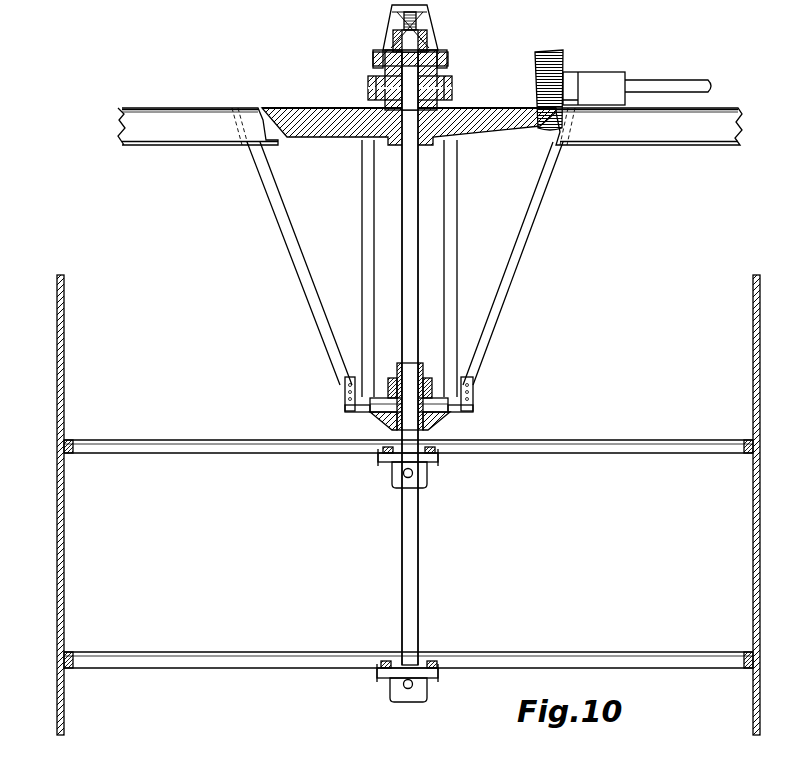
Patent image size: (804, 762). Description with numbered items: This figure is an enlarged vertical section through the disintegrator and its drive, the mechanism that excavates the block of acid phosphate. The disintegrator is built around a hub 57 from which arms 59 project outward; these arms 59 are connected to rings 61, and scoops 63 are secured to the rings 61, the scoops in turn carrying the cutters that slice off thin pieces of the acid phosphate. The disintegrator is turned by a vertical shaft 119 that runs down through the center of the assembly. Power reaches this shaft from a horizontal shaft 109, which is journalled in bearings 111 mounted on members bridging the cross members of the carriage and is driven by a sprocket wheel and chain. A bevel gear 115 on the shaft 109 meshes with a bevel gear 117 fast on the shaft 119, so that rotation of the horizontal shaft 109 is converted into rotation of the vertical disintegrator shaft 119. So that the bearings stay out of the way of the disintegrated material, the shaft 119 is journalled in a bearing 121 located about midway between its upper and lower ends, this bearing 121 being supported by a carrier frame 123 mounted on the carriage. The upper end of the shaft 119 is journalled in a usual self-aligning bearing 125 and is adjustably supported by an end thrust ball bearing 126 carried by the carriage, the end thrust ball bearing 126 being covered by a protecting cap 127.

The hub 57 is at (428, 476).
The arms 59 is at (440, 460).
The rings 61 is at (566, 441).
The scoops 63 is at (67, 405).
The shaft 109 is at (668, 80).
The bearings 111 is at (623, 72).
The bevel gear 115 is at (565, 57).
The bevel gear 117 is at (482, 116).
The shaft 119 is at (423, 211).
The bearing 121 is at (473, 398).
The carrier frame 123 is at (287, 208).
The self-aligning bearing 125 is at (440, 77).
The end thrust ball bearing 126 is at (433, 53).
The protecting cap 127 is at (426, 30).